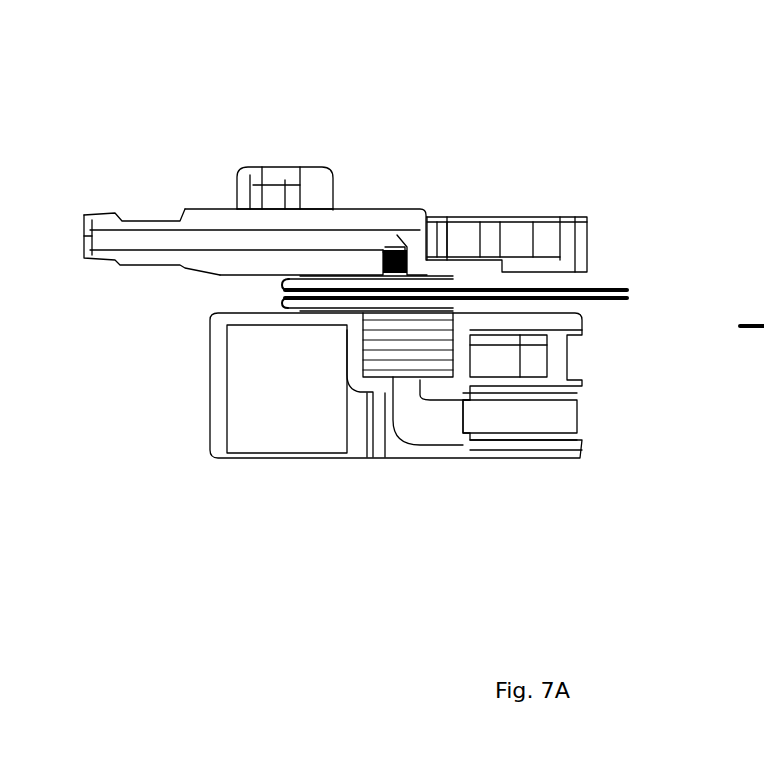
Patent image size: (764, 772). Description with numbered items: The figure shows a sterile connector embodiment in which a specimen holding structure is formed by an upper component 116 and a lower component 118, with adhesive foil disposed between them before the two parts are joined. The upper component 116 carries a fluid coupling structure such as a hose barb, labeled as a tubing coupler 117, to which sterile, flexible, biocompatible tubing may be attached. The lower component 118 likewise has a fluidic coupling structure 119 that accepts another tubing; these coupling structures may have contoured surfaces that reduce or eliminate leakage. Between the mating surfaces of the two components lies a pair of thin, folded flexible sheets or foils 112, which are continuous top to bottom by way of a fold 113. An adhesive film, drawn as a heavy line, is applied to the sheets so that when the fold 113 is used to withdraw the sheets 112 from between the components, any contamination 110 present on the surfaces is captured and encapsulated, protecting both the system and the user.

The upper component 116 is at (360, 224).
The Tubing coupler 117 is at (133, 218).
The Contamination 110 is at (395, 262).
The fold 113 is at (629, 290).
The folded flexible sheets 112 is at (370, 302).
The lower component 118 is at (350, 448).
The fluidic coupling structure 119 is at (505, 418).